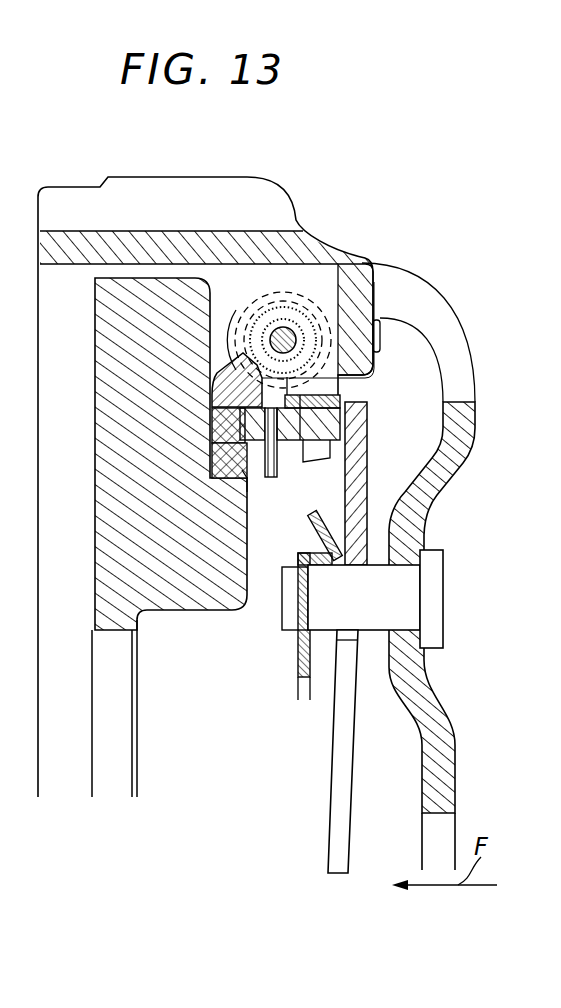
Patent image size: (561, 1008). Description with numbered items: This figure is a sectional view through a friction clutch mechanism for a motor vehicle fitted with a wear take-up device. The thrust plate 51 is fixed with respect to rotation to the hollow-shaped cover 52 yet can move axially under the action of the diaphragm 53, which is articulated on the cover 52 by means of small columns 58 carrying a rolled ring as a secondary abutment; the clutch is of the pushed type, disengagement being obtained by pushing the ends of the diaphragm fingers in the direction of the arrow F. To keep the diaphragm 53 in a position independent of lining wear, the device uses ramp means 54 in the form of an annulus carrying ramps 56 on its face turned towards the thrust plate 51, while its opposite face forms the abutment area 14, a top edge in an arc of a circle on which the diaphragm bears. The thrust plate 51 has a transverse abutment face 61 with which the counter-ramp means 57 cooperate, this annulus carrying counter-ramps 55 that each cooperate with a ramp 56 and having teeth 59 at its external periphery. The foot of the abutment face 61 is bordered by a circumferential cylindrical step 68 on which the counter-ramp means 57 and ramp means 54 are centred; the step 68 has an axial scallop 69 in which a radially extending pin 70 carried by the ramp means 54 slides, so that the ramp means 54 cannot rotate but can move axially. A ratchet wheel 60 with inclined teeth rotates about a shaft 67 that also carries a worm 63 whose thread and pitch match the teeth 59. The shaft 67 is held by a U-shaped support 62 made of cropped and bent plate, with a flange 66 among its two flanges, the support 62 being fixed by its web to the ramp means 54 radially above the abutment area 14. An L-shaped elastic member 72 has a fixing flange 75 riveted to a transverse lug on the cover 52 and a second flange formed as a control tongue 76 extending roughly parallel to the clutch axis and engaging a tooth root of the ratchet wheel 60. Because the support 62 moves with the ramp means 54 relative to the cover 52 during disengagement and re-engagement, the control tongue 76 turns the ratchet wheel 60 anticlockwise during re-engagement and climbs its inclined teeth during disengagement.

The abutment area 14 is at (366, 412).
The thrust plate 51 is at (191, 610).
The cover 52 is at (463, 477).
The diaphragm 53 is at (332, 755).
The ramp means 54 is at (290, 444).
The counter-ramps 55 is at (242, 453).
The ramps 56 is at (230, 427).
The counter-ramp means 57 is at (236, 420).
The small columns 58 is at (435, 612).
The teeth 59 is at (225, 330).
The ratchet wheel 60 is at (292, 328).
The transverse abutment face 61 is at (217, 401).
The support 62 is at (338, 391).
The worm 63 is at (258, 294).
The flange 66 is at (302, 468).
The shaft 67 is at (323, 258).
The circumferential cylindrical step 68 is at (317, 464).
The axial scallop 69 is at (327, 450).
The pin 70 is at (247, 480).
The elastic member 72 is at (445, 318).
The flange 75 is at (363, 346).
The control tongue 76 is at (363, 381).